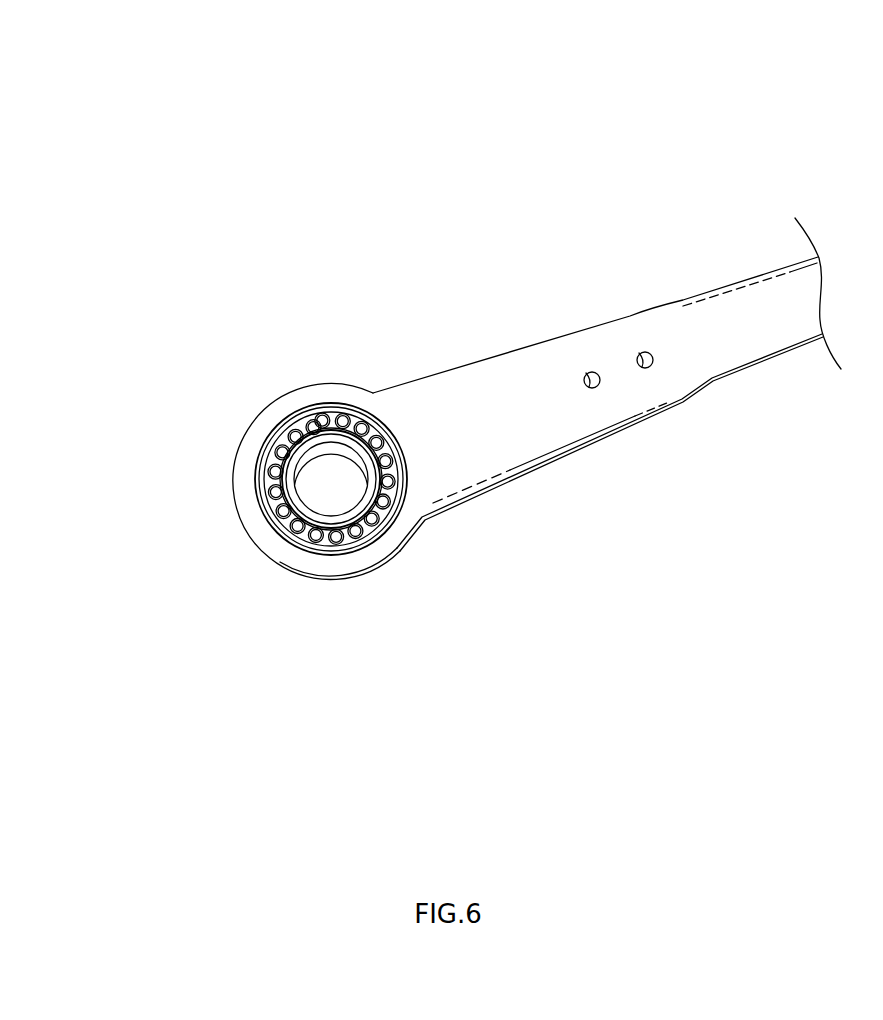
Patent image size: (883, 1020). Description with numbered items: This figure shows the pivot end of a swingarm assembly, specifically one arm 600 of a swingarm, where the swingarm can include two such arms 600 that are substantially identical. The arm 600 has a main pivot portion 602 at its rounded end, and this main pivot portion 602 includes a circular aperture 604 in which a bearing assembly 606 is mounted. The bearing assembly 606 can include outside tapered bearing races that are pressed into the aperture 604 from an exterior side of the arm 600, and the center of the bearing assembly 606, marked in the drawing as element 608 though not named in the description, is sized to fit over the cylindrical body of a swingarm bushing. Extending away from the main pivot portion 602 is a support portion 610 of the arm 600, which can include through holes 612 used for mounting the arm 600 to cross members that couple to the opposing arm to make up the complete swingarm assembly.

The arm 600 is at (814, 32).
The main pivot portion 602 is at (352, 577).
The circular aperture 604 is at (297, 547).
The bearing assembly 606 is at (258, 496).
The inner race 608 is at (315, 487).
The support portion 610 is at (475, 372).
The through holes 612 is at (585, 371).